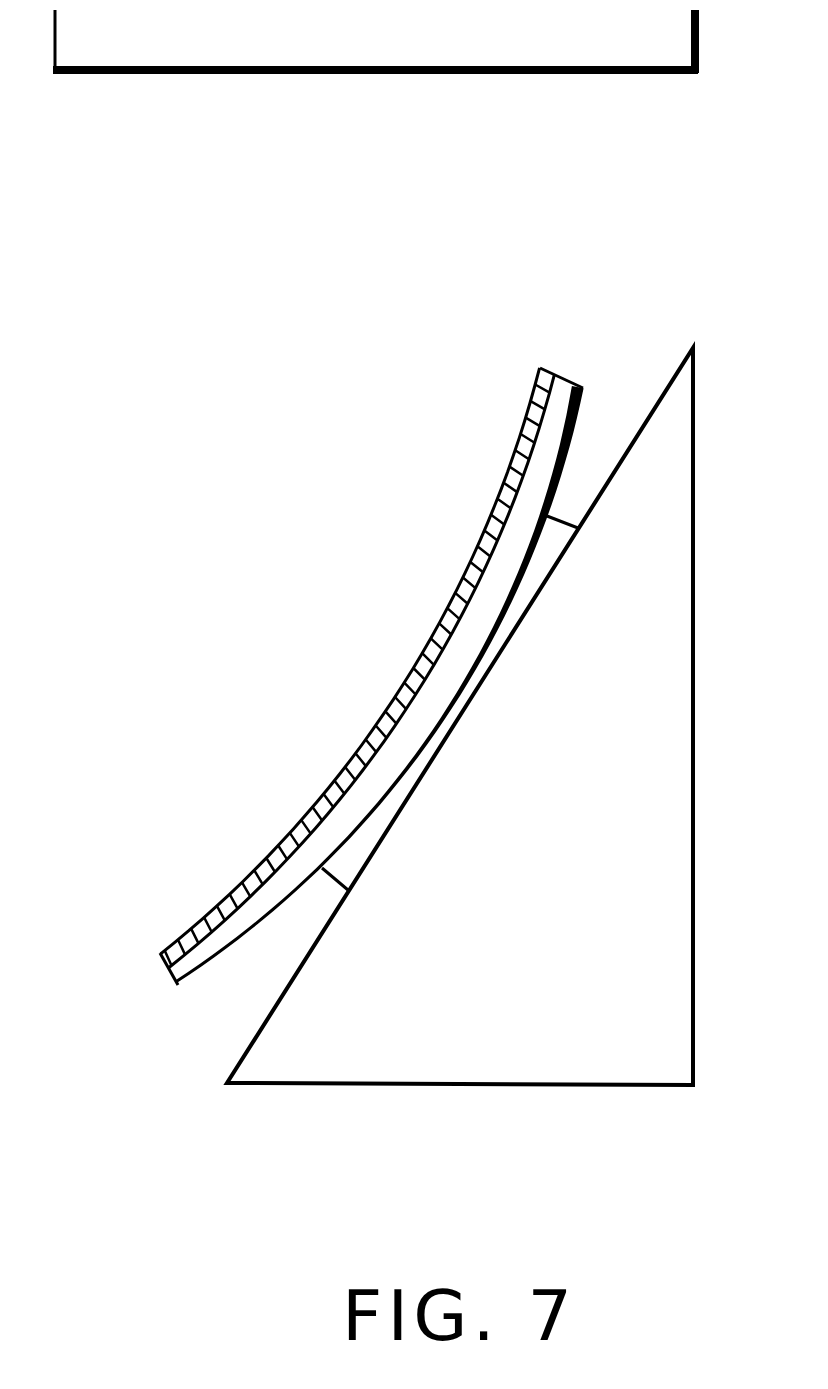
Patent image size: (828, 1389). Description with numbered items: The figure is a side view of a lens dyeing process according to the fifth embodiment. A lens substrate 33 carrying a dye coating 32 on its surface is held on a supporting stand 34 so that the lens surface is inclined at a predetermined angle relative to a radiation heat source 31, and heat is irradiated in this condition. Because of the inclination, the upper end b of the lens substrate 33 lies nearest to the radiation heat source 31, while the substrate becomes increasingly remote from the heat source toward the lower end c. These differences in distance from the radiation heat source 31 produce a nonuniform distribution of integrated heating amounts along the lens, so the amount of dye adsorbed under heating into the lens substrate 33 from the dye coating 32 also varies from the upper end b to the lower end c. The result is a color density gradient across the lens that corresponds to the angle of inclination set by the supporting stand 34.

The radiation heat source 31 is at (375, 40).
The dye coating 32 is at (505, 480).
The lens substrate 33 is at (580, 407).
The supporting stand 34 is at (460, 716).
The upper end b is at (560, 375).
The lower end c is at (170, 972).